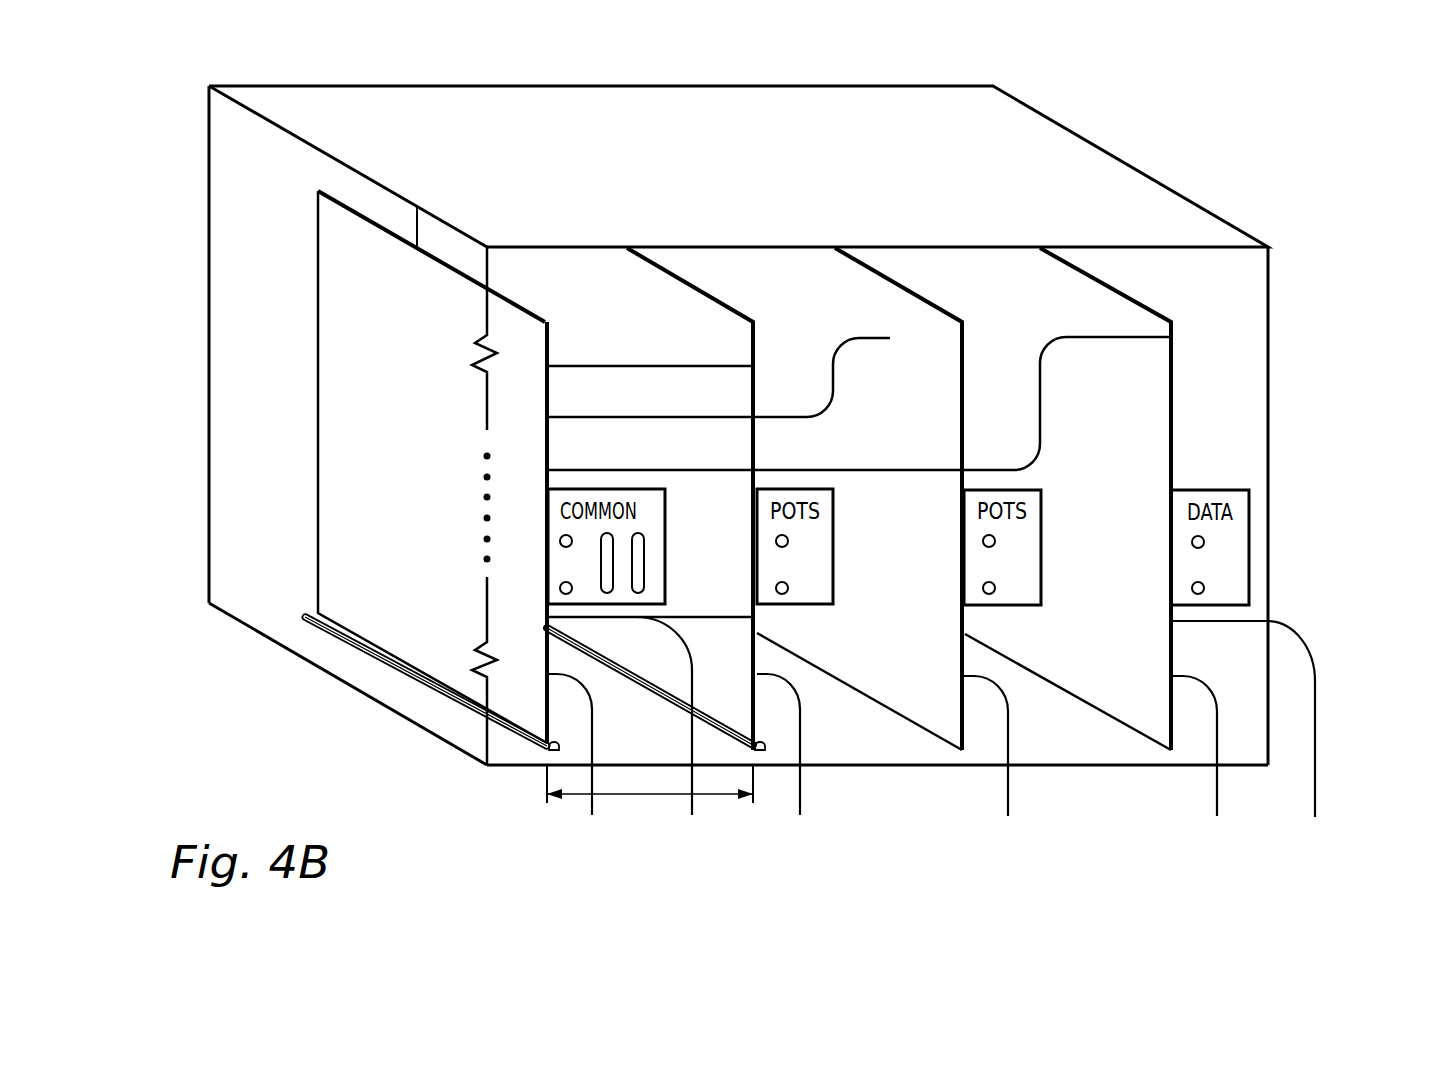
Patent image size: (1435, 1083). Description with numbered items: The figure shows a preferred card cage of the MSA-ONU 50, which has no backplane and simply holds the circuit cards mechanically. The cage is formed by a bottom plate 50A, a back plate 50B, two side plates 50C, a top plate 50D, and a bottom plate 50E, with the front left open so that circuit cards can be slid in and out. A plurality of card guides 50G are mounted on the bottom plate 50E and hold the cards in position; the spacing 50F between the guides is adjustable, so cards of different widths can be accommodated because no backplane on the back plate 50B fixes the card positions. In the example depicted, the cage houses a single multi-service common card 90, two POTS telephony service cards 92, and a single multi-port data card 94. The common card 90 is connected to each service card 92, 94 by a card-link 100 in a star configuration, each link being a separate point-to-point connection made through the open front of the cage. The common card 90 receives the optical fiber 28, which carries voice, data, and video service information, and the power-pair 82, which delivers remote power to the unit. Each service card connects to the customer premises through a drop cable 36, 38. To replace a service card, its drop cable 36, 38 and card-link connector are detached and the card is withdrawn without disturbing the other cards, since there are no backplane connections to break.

The MSA-ONU card cage 50 is at (771, 459).
The bottom plate 50A is at (318, 650).
The back plate 50B is at (230, 340).
The side plate 50C is at (1242, 330).
The top plate 50D is at (1062, 158).
The bottom plate 50E is at (510, 753).
The spacing 50F is at (657, 793).
The card guide 50G is at (393, 667).
The multi-service common card 90 is at (392, 450).
The POTS telephony service card 92 is at (758, 382).
The multi-port data card 94 is at (1173, 430).
The card-link 100 is at (713, 366).
The optical fiber 28 is at (690, 855).
The drop cable 36 is at (1212, 882).
The drop cable 38 is at (807, 880).
The power-pair 82 is at (588, 878).